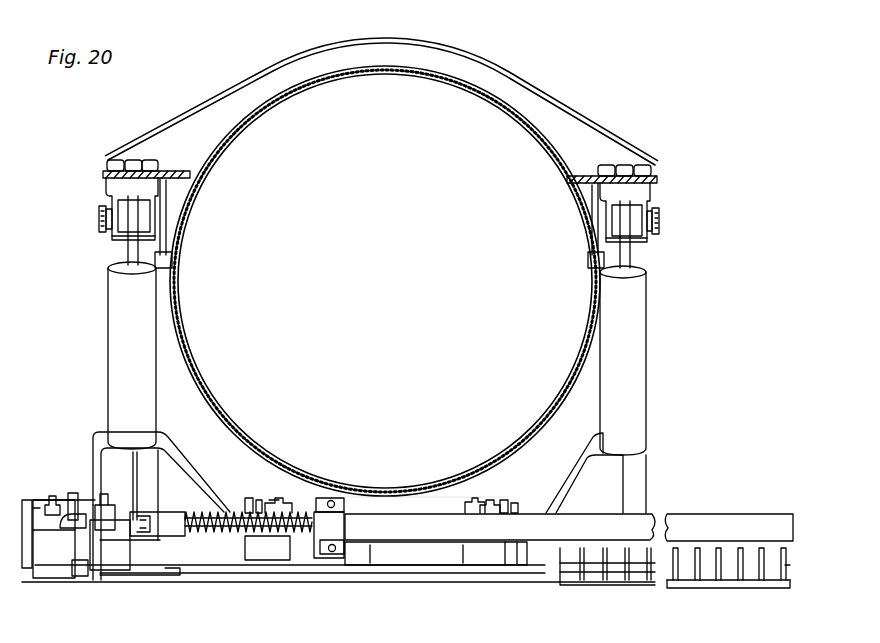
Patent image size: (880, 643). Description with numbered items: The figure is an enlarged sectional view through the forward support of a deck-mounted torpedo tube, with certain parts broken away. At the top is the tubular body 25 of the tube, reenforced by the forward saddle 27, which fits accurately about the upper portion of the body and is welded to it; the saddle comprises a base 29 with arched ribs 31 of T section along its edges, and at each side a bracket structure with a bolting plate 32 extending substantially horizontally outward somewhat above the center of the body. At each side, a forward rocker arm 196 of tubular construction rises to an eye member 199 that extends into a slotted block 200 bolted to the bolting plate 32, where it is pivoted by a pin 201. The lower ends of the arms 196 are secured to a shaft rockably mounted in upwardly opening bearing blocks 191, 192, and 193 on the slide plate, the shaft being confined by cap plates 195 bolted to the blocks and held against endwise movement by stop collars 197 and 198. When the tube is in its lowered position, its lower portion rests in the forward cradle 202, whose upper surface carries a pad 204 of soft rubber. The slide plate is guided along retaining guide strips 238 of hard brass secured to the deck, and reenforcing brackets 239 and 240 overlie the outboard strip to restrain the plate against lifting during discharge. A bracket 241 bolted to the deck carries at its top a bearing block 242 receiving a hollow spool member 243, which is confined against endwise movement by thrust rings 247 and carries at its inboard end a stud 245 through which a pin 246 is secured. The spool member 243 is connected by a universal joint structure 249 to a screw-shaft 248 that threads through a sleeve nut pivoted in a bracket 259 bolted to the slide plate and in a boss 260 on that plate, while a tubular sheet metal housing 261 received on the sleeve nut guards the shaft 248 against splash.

The body 25 is at (178, 264).
The forward saddle 27 is at (602, 110).
The base 29 is at (249, 112).
The arched ribs 31 is at (190, 126).
The bolting plate 32 is at (103, 174).
The bearing block 191 is at (492, 560).
The bearing block 192 is at (248, 505).
The bearing block 193 is at (32, 500).
The cap plates 195 is at (285, 500).
The forward rocker arms 196 is at (120, 337).
The stop collar 197 is at (30, 570).
The stop collar 198 is at (510, 504).
The eye member 199 is at (128, 216).
The slotted block 200 is at (120, 236).
The pin 201 is at (100, 216).
The forward cradle 202 is at (494, 488).
The pad 204 is at (385, 464).
The retaining guide strips 238 is at (205, 576).
The reenforcing bracket 239 is at (716, 584).
The reenforcing bracket 240 is at (586, 586).
The bracket 241 is at (133, 566).
The bearing block 242 is at (113, 512).
The hollow spool member 243 is at (54, 539).
The stud 245 is at (65, 500).
The pin 246 is at (102, 505).
The thrust rings 247 is at (82, 577).
The screw-shaft 248 is at (272, 536).
The universal joint structure 249 is at (170, 506).
The bracket 259 is at (345, 505).
The boss 260 is at (340, 556).
The tubular sheet metal housing 261 is at (648, 522).